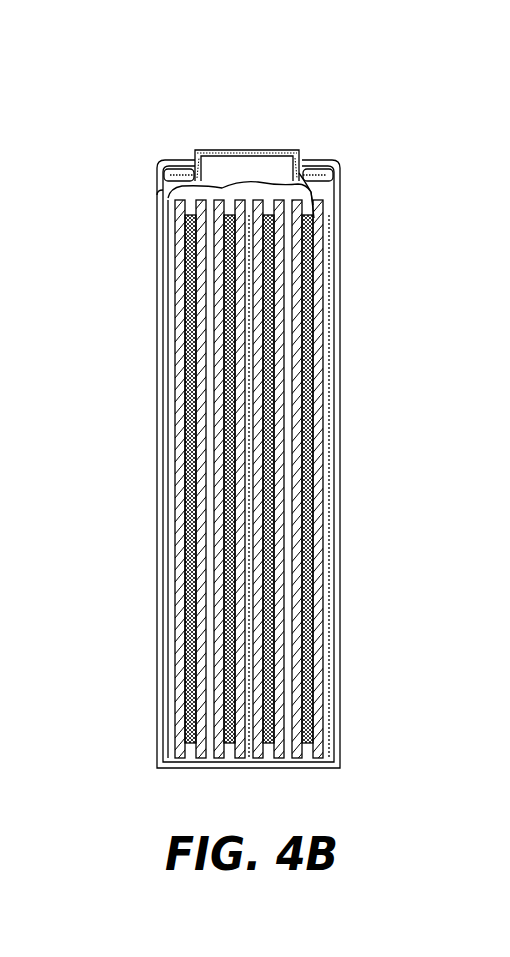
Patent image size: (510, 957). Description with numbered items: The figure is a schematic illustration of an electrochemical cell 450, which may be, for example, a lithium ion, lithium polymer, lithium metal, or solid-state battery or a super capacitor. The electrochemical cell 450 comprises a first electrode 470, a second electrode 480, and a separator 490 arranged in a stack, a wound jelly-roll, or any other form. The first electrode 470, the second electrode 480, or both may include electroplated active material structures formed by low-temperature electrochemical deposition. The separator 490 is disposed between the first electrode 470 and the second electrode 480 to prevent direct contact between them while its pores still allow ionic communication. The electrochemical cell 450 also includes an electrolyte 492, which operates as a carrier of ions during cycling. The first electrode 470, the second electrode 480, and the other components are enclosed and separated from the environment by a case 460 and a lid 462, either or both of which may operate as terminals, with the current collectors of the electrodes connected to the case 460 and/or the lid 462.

The electrochemical cell 450 is at (134, 134).
The case 460 is at (157, 235).
The lid 462 is at (277, 150).
The first electrode 470 is at (162, 312).
The second electrode 480 is at (176, 374).
The separator 490 is at (188, 461).
The electrolyte 492 is at (323, 197).